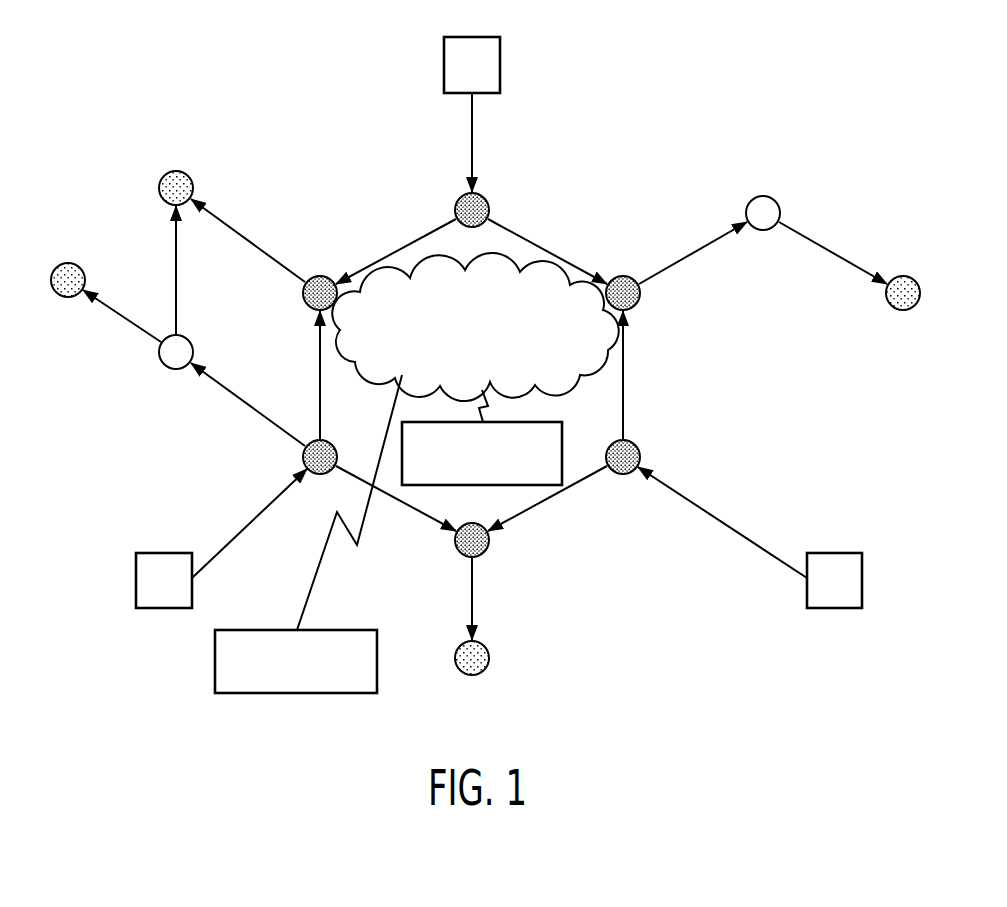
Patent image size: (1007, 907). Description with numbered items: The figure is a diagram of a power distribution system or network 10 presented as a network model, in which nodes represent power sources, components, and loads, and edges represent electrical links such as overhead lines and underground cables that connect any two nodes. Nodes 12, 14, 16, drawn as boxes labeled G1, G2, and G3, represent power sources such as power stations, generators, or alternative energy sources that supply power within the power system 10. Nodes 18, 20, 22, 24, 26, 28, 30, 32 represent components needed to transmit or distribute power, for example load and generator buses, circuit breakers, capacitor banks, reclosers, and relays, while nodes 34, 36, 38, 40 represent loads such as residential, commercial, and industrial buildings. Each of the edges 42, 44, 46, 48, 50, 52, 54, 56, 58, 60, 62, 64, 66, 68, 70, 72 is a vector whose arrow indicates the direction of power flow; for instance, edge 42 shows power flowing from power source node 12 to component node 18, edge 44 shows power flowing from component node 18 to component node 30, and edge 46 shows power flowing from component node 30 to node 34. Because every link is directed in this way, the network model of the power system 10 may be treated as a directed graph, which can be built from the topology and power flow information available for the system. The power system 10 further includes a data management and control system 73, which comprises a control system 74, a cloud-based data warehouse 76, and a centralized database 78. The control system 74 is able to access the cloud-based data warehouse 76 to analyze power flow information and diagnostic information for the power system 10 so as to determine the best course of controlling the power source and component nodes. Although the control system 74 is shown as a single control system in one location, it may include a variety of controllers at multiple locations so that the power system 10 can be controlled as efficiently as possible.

The power distribution system 10 is at (657, 116).
The power source node 12 is at (165, 610).
The power source node 14 is at (835, 610).
The power source node 16 is at (472, 36).
The component node 18 is at (302, 456).
The component node 20 is at (311, 278).
The component node 22 is at (460, 198).
The component node 24 is at (640, 302).
The component node 26 is at (635, 446).
The component node 28 is at (486, 553).
The component node 30 is at (188, 342).
The component node 32 is at (755, 197).
The load node 34 is at (84, 270).
The load node 36 is at (164, 176).
The load node 38 is at (486, 670).
The load node 40 is at (888, 306).
The edge 42 is at (246, 530).
The edge 44 is at (255, 402).
The edge 46 is at (124, 324).
The edge 48 is at (178, 276).
The edge 50 is at (318, 366).
The edge 52 is at (252, 249).
The edge 54 is at (412, 522).
The edge 56 is at (473, 600).
The edge 58 is at (732, 528).
The edge 60 is at (553, 510).
The edge 62 is at (624, 388).
The edge 64 is at (688, 250).
The edge 66 is at (828, 254).
The edge 68 is at (472, 140).
The edge 70 is at (398, 242).
The edge 72 is at (545, 240).
The data management and control system 73 is at (386, 582).
The control system 74 is at (295, 694).
The cloud-based data warehouse 76 is at (470, 270).
The centralized database 78 is at (520, 422).